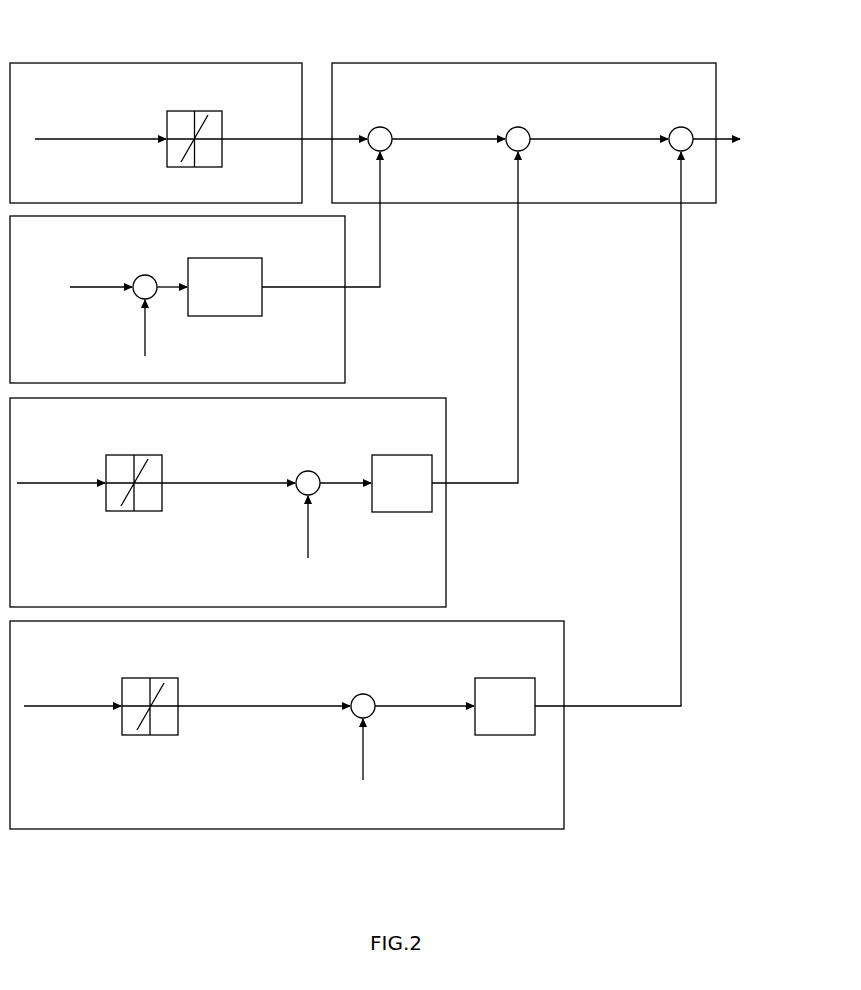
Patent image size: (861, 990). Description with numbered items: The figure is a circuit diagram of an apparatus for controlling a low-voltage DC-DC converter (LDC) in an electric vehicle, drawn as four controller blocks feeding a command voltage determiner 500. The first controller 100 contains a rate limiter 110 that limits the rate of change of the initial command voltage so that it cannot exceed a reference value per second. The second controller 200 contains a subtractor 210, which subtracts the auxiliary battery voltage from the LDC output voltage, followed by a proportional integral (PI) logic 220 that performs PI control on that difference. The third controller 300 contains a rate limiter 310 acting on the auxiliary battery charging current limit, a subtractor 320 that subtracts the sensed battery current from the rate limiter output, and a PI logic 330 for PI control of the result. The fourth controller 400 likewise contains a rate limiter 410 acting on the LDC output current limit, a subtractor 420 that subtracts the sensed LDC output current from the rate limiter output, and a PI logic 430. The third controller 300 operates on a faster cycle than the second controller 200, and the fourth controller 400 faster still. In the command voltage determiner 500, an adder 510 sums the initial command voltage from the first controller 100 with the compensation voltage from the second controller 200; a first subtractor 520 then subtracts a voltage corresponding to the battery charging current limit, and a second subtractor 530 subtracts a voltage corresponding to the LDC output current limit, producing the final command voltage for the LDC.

The first controller 100 is at (155, 63).
The rate limiter 110 is at (222, 111).
The second controller 200 is at (345, 356).
The subtractor 210 is at (143, 274).
The proportional integral (PI) logic 220 is at (262, 258).
The third controller 300 is at (446, 540).
The rate limiter 310 is at (160, 455).
The subtractor 320 is at (307, 471).
The PI logic 330 is at (400, 455).
The fourth controller 400 is at (565, 621).
The rate limiter 410 is at (175, 678).
The subtractor 420 is at (362, 694).
The PI logic 430 is at (502, 678).
The command voltage determiner 500 is at (503, 63).
The adder 510 is at (378, 127).
The first subtractor 520 is at (515, 127).
The second subtractor 530 is at (678, 127).